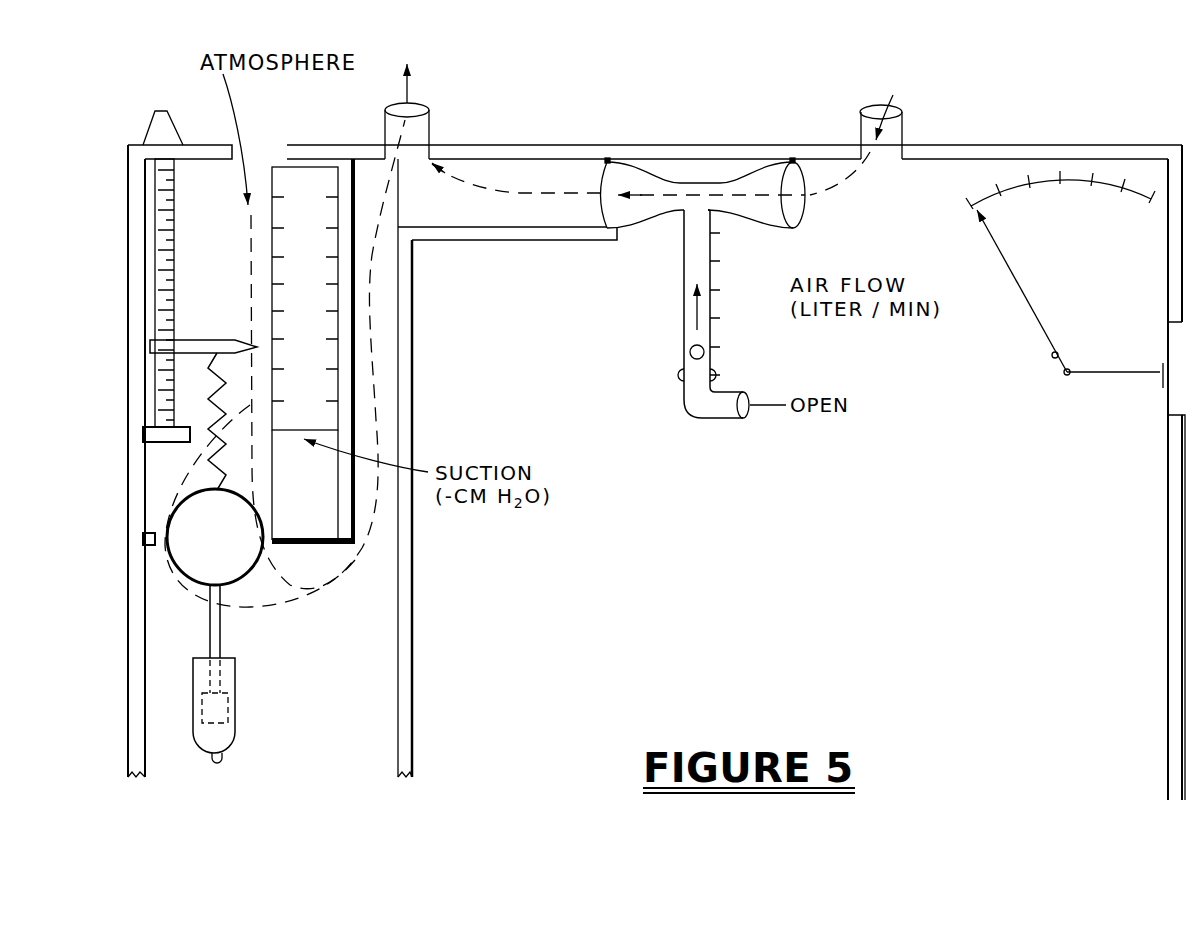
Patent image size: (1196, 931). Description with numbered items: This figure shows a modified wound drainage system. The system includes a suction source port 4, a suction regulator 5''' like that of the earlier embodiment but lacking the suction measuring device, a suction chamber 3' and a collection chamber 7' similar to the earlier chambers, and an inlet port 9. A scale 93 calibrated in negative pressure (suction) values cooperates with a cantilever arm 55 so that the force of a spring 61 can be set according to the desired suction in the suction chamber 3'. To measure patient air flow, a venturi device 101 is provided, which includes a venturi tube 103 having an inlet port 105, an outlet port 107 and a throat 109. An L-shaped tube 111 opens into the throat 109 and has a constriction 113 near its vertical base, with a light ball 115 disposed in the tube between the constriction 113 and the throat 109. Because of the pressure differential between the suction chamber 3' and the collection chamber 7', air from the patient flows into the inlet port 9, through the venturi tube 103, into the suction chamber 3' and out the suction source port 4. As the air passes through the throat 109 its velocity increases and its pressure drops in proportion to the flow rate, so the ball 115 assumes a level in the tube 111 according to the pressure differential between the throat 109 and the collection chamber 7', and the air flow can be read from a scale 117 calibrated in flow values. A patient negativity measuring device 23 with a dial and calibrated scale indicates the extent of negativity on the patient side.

The suction regulator 5''' is at (621, 438).
The scale 93 is at (265, 155).
The suction source port 4 is at (430, 125).
The suction chamber 3' is at (507, 468).
The outlet port 107 is at (626, 176).
The venturi tube 103 is at (655, 175).
The throat 109 is at (706, 183).
The inlet port 105 is at (775, 178).
The venturi device 101 is at (691, 191).
The inlet port 9 is at (905, 125).
The cantilever arm 55 is at (193, 338).
The spring 61 is at (215, 454).
The L-shaped tube 111 is at (725, 314).
The light ball 115 is at (689, 349).
The constriction 113 is at (681, 375).
The scale 117 is at (758, 368).
The collection chamber 7' is at (798, 488).
The patient negativity measuring device 23 is at (1013, 322).